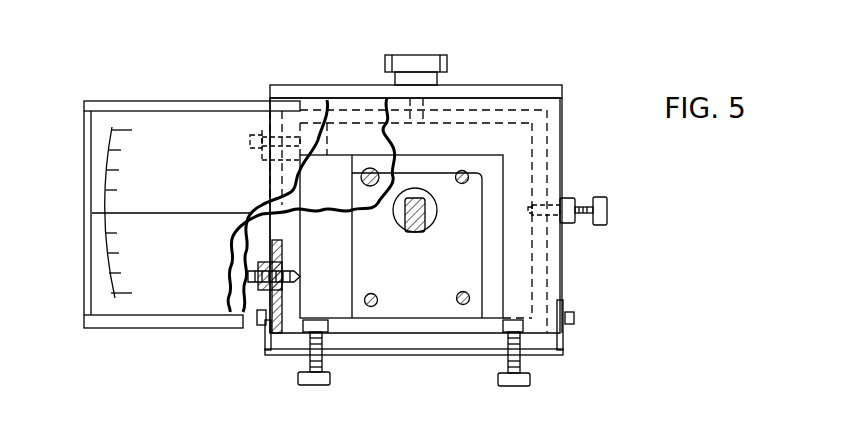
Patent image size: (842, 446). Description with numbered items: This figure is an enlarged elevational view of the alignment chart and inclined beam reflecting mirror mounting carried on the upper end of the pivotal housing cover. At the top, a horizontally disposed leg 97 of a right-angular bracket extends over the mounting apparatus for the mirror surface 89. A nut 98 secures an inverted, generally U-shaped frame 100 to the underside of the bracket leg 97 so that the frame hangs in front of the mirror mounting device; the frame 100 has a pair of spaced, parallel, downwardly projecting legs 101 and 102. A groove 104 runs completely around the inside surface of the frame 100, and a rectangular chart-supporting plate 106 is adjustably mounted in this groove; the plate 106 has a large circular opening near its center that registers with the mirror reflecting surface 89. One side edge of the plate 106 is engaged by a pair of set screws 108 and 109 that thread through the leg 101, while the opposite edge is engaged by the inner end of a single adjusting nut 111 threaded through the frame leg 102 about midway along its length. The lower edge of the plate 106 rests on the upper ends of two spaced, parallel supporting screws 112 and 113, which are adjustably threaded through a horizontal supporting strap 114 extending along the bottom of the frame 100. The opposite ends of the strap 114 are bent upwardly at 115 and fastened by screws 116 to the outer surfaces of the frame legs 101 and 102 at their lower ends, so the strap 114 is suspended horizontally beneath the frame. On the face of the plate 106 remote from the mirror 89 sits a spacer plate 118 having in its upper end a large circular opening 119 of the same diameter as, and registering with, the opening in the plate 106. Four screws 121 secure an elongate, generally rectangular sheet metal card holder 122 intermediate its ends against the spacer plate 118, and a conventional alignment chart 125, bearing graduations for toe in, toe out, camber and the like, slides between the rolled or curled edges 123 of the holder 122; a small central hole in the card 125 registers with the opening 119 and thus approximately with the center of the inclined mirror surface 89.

The mirror surface 89 is at (410, 230).
The horizontally disposed leg 97 is at (306, 85).
The nut 98 is at (426, 55).
The U-shaped frame 100 is at (563, 128).
The frame leg 101 is at (262, 160).
The frame leg 102 is at (562, 272).
The groove 104 is at (292, 332).
The chart-supporting plate 106 is at (308, 279).
The set screw 108 is at (257, 138).
The set screw 109 is at (248, 275).
The adjusting nut 111 is at (583, 200).
The supporting screw 112 is at (331, 380).
The supporting screw 113 is at (498, 377).
The supporting strap 114 is at (410, 357).
The upwardly bent end 115 is at (268, 338).
The screw 116 is at (257, 318).
The spacer plate 118 is at (399, 301).
The circular opening 119 is at (424, 230).
The screws 121 is at (376, 170).
The card holder 122 is at (365, 100).
The rolled edges 123 is at (98, 108).
The alignment chart 125 is at (122, 268).